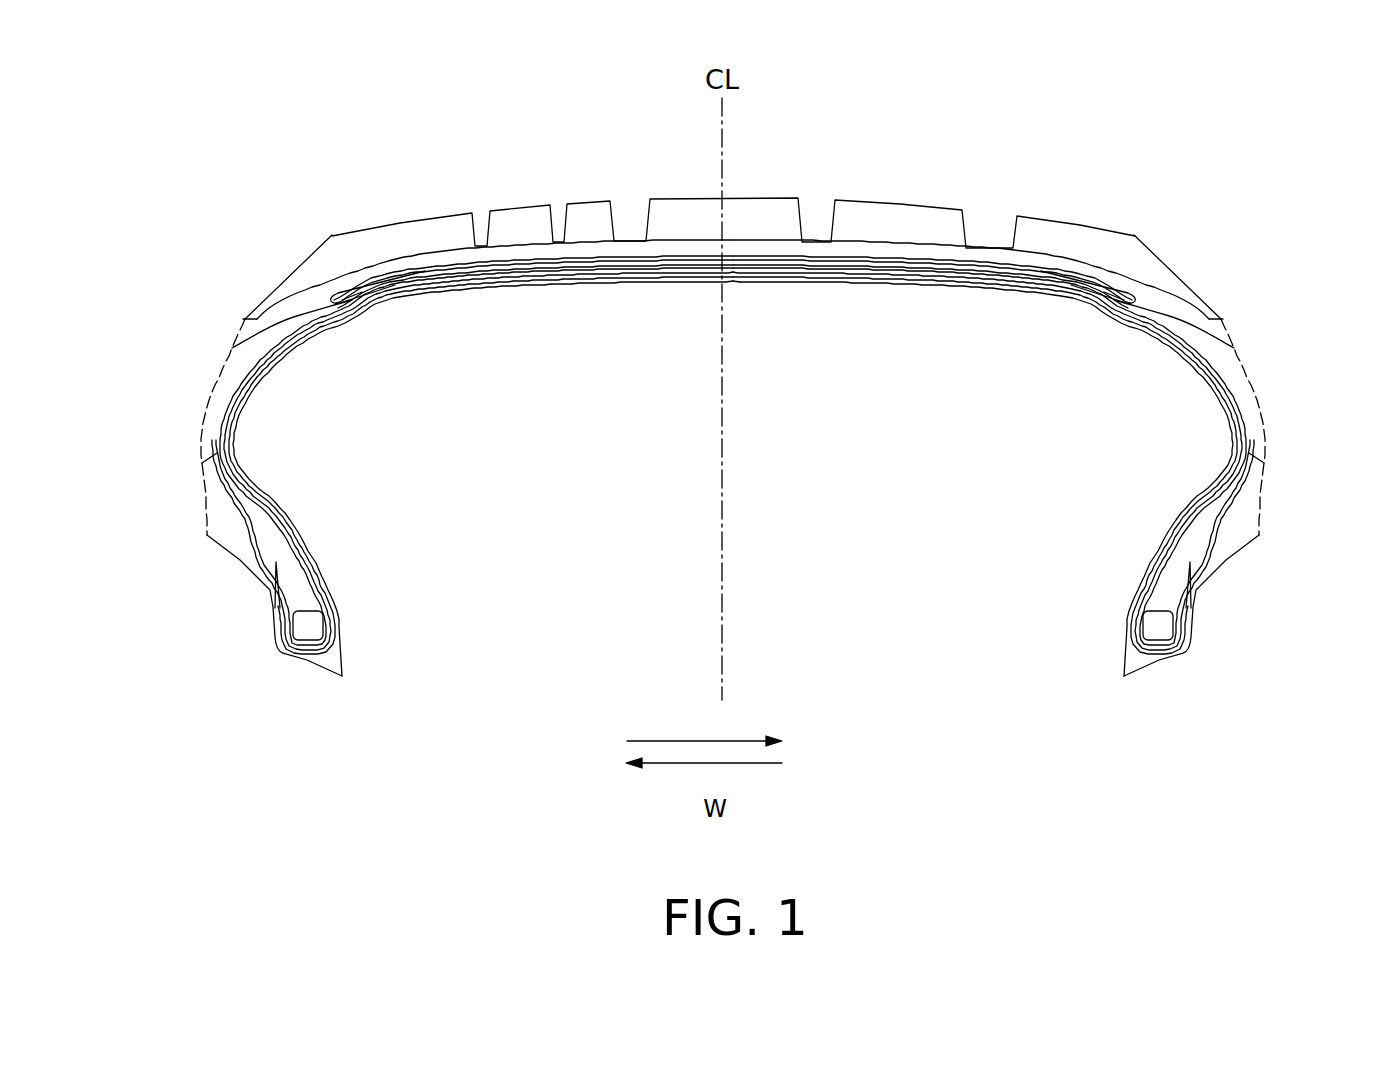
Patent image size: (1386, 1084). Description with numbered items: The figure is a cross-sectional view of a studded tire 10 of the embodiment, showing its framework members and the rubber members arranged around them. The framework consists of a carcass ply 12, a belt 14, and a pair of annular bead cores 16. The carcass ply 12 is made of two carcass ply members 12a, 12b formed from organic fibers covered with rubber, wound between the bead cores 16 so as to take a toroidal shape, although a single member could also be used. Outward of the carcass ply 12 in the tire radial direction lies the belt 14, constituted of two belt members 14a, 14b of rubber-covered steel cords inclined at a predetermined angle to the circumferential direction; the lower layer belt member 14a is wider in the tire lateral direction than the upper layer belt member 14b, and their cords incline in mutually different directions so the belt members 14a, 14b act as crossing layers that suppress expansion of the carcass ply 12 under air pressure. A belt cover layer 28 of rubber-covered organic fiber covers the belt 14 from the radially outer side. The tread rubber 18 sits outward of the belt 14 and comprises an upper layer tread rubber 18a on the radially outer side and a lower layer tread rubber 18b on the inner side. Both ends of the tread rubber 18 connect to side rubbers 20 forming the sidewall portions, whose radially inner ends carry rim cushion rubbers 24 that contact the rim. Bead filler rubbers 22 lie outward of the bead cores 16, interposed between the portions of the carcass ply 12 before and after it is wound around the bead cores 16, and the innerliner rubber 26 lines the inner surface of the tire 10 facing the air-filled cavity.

The studded tire 10 is at (734, 390).
The carcass ply 12 is at (733, 461).
The carcass ply member 12a is at (1200, 376).
The carcass ply member 12b is at (1190, 350).
The belt 14 is at (733, 206).
The belt member 14a is at (906, 272).
The belt member 14b is at (949, 266).
The bead core 16 is at (310, 625).
The tread rubber 18 is at (767, 273).
The upper layer tread rubber 18a is at (733, 223).
The lower layer tread rubber 18b is at (1128, 283).
The side rubber 20 is at (213, 384).
The bead filler rubber 22 is at (298, 587).
The rim cushion rubber 24 is at (222, 517).
The innerliner rubber 26 is at (338, 640).
The belt cover layer 28 is at (382, 277).